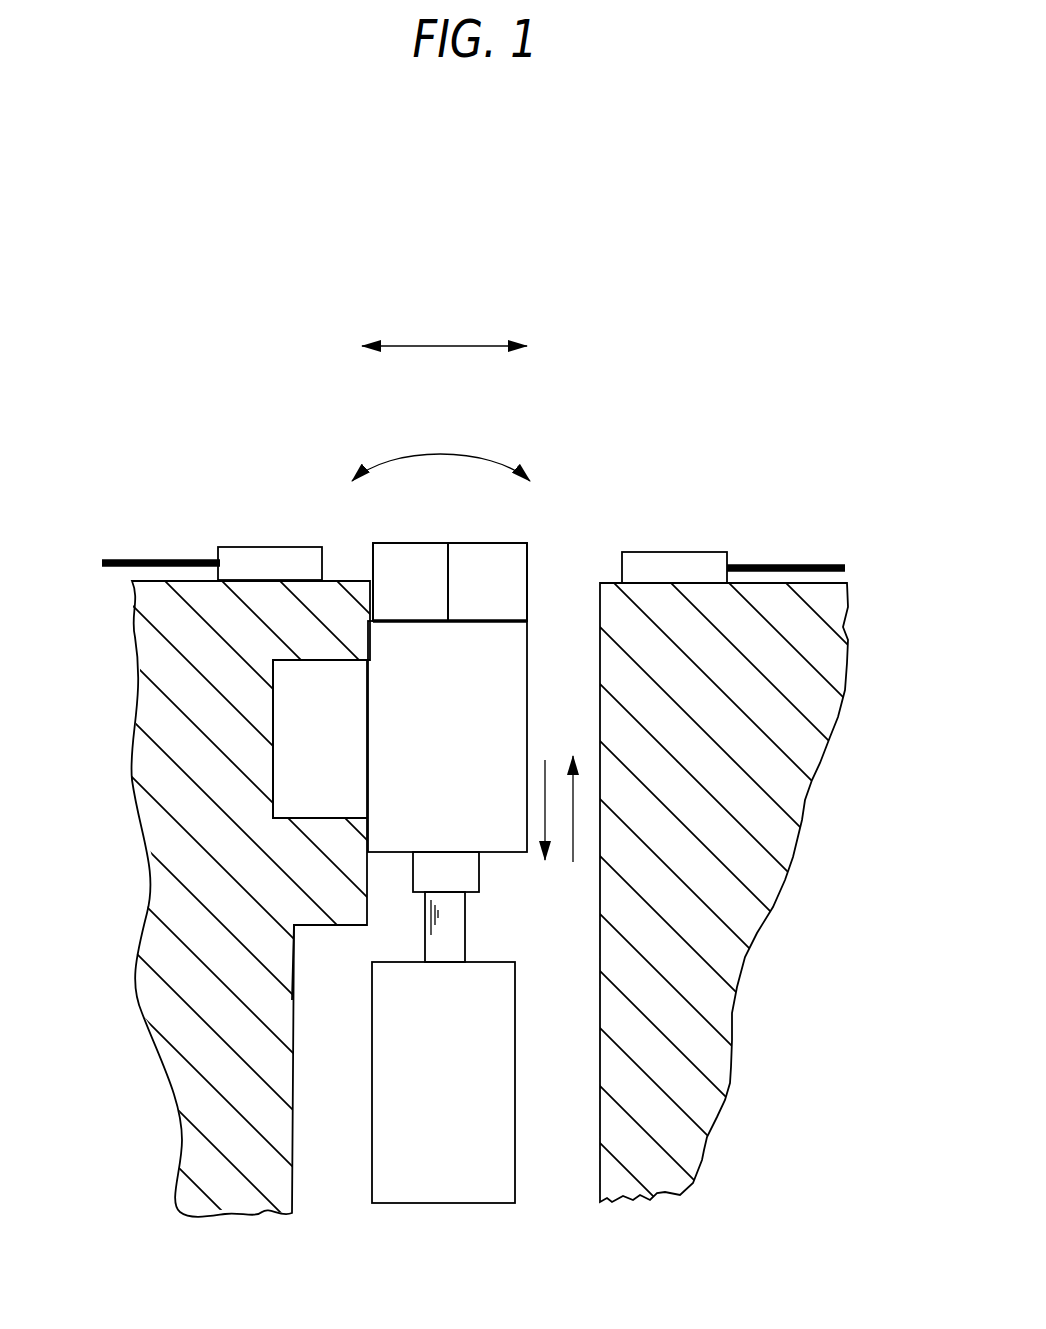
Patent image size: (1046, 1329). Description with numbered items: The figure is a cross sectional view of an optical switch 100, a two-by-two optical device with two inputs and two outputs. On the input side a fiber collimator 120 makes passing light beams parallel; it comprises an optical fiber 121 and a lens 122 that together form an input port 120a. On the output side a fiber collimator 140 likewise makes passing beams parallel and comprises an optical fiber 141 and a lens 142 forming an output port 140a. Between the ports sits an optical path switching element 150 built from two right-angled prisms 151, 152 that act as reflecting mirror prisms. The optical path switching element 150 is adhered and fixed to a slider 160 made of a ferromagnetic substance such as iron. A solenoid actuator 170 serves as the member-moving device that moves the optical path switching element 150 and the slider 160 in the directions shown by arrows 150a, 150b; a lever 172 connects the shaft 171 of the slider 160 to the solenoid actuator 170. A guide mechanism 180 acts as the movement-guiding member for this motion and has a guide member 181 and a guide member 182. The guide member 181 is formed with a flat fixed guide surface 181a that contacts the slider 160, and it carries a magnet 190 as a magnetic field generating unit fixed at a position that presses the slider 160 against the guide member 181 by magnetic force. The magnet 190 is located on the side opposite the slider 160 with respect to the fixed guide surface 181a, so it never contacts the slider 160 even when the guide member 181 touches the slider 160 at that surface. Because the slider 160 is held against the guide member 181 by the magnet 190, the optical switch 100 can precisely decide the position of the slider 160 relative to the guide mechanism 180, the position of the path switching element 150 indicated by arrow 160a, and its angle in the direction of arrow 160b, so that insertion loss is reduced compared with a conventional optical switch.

The optical switch 100 is at (632, 251).
The fiber collimator 120 is at (758, 496).
The input port 120a is at (845, 568).
The optical fiber 121 is at (778, 566).
The lens 122 is at (672, 552).
The fiber collimator 140 is at (188, 488).
The output port 140a is at (101, 563).
The optical fiber 141 is at (181, 560).
The lens 142 is at (273, 557).
The optical path switching element 150 is at (477, 529).
The arrow (movement direction) 150a is at (546, 792).
The arrow (movement direction) 150b is at (586, 792).
The right-angled prism 151 is at (405, 545).
The right-angled prism 152 is at (483, 545).
The slider 160 is at (505, 682).
The arrow (position) 160a is at (449, 346).
The arrow (angle direction) 160b is at (444, 444).
The solenoid actuator 170 is at (505, 1120).
The shaft 171 is at (455, 940).
The lever 172 is at (470, 868).
The guide mechanism 180 is at (523, 852).
The guide member 181 is at (156, 710).
The fixed guide surface 181a is at (370, 928).
The guide member 182 is at (808, 682).
The magnet 190 is at (290, 772).